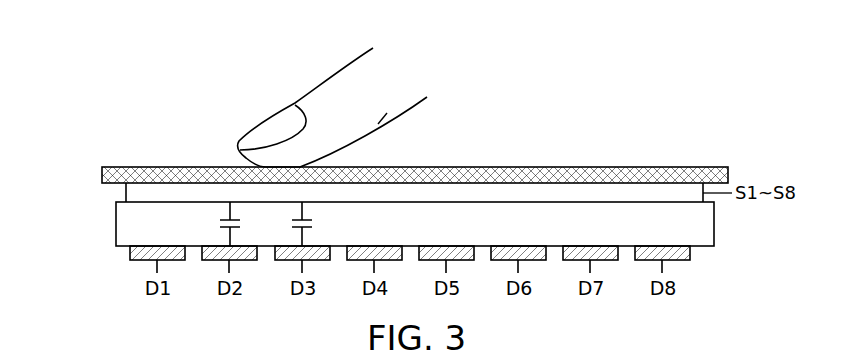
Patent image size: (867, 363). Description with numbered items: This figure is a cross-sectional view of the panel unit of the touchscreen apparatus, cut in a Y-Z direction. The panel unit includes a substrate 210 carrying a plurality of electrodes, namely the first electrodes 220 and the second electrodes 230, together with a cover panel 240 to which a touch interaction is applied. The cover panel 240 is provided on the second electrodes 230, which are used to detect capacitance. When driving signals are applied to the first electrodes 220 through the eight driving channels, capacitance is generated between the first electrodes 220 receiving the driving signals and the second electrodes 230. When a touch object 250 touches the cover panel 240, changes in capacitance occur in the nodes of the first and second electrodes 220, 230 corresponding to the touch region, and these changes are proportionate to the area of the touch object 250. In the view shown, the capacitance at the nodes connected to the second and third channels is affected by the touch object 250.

The substrate 210 is at (123, 220).
The first electrodes 220 is at (127, 252).
The second electrodes 230 is at (133, 190).
The cover panel 240 is at (532, 167).
The touch object 250 is at (338, 92).